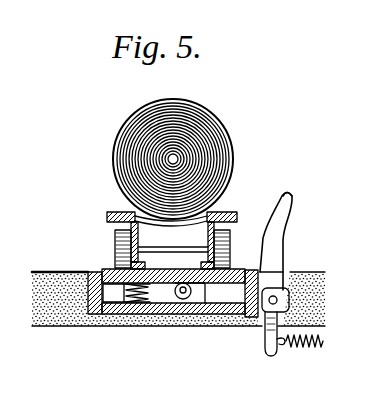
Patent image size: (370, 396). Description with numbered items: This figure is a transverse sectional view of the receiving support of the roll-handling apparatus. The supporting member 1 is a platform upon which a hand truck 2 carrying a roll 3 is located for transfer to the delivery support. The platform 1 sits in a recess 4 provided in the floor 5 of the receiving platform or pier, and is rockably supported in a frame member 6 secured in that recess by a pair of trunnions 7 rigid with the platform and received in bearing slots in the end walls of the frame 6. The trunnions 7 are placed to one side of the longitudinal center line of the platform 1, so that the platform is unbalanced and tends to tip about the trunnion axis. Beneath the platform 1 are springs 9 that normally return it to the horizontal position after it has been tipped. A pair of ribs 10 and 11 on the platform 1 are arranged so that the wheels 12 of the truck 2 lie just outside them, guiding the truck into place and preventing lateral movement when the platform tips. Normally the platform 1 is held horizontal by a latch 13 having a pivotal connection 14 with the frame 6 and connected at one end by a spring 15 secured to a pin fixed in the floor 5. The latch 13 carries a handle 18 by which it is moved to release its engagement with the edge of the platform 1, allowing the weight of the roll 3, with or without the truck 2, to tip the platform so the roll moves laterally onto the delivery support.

The supporting member 1 is at (160, 276).
The hand truck 2 is at (227, 211).
The roll 3 is at (114, 152).
The recess 4 is at (288, 277).
The floor 5 is at (62, 273).
The frame member 6 is at (210, 305).
The trunnions 7 is at (178, 303).
The springs 9 is at (130, 322).
The rib 10 is at (200, 300).
The rib 11 is at (125, 287).
The wheels 12 is at (115, 238).
The latch 13 is at (262, 266).
The pivotal connection 14 is at (262, 311).
The spring 15 is at (312, 348).
The handle 18 is at (292, 203).